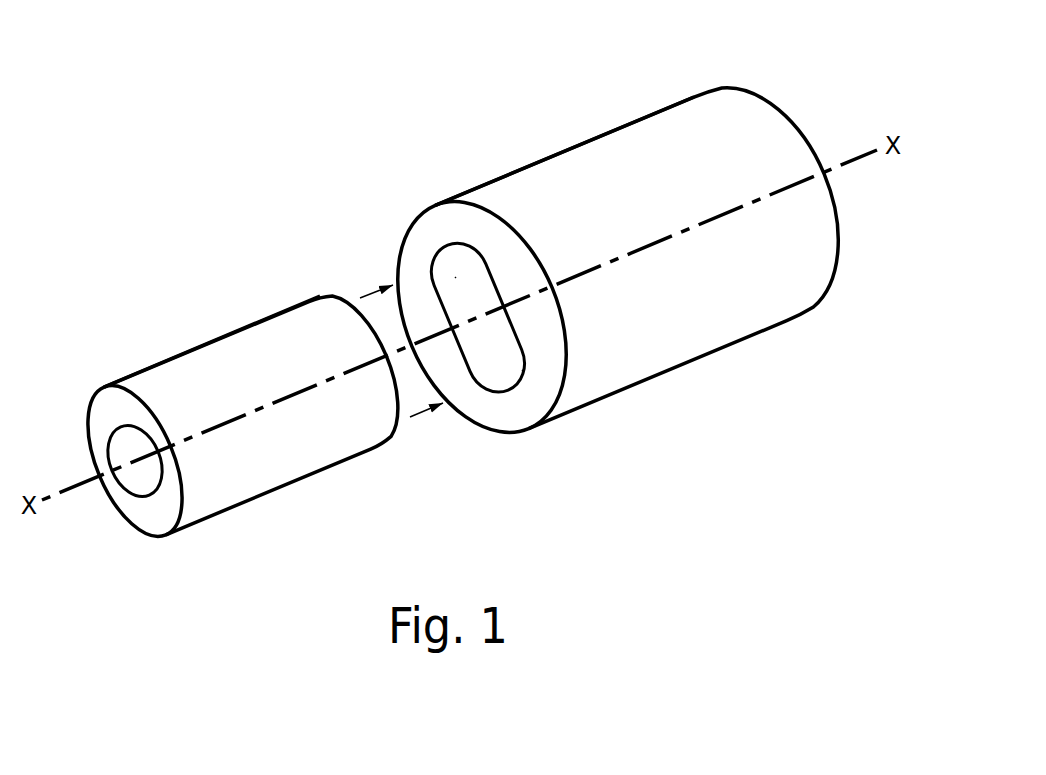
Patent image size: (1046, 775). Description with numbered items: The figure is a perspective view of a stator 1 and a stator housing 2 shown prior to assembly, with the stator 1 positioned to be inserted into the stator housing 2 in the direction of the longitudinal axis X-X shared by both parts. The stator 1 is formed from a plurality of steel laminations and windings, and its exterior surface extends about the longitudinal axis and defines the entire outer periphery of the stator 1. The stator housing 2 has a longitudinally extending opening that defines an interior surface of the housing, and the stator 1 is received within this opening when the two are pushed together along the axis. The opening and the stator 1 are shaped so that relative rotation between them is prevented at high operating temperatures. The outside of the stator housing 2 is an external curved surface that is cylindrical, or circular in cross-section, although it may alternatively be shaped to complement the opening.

The stator 1 is at (243, 401).
The stator housing 2 is at (618, 260).